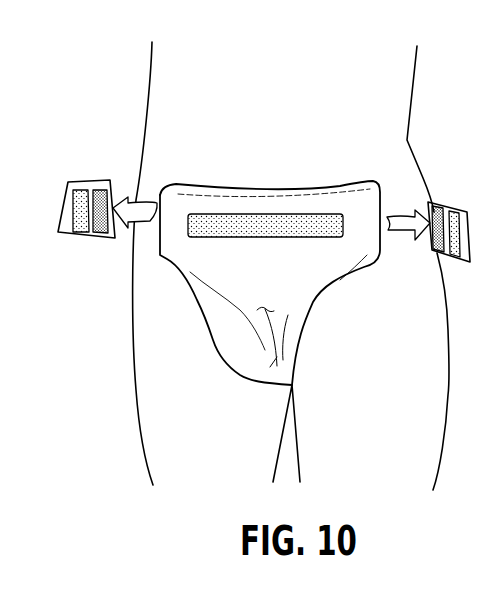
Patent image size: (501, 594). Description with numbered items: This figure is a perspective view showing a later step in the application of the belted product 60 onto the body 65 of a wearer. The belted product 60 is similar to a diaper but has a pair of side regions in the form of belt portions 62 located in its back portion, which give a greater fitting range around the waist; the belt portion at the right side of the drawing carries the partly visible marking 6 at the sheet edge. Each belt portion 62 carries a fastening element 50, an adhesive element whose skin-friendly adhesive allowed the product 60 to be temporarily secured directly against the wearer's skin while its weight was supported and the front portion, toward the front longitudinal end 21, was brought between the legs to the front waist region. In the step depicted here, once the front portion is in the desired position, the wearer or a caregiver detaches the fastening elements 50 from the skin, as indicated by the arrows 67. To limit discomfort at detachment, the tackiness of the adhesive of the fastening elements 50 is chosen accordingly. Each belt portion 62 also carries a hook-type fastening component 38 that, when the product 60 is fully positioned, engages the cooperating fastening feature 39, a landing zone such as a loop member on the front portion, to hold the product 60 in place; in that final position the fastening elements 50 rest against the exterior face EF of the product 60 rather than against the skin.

The front longitudinal end 21 is at (290, 186).
The fastening component 38 is at (72, 210).
The cooperating fastening feature 39 is at (210, 238).
The fastening element 50 is at (97, 233).
The belted product 60 is at (253, 138).
The belt portion 62 is at (83, 182).
The body 65 is at (408, 100).
The arrows 67 is at (147, 222).
The fastening tab (right side) 6 is at (463, 262).
The exterior face EF is at (280, 337).